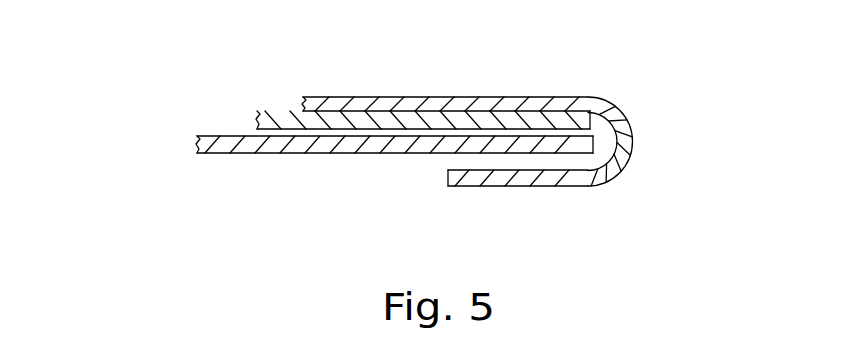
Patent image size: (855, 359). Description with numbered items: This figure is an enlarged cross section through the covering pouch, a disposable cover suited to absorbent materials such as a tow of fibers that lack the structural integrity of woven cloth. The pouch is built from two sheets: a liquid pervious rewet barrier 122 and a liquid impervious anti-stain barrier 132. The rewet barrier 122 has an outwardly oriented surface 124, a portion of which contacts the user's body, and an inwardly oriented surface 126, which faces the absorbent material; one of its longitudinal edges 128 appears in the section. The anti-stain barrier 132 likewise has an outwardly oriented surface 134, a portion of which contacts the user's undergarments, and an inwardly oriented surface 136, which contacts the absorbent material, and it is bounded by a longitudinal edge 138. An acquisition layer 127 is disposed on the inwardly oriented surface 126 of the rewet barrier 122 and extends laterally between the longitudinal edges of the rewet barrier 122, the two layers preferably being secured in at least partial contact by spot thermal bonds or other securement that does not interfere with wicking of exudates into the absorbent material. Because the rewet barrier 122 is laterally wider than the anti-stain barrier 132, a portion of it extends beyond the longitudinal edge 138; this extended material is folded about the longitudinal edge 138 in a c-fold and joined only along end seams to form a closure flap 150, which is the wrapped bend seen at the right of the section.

The rewet barrier 122 is at (413, 98).
The outwardly oriented surface of rewet barrier 124 is at (538, 98).
The inwardly oriented surface of rewet barrier 126 is at (585, 106).
The acquisition layer 127 is at (303, 110).
The longitudinal edge of rewet barrier 128 is at (632, 144).
The anti-stain barrier 132 is at (433, 148).
The outwardly oriented surface of anti-stain barrier 134 is at (277, 153).
The inwardly oriented surface of anti-stain barrier 136 is at (242, 135).
The longitudinal edge of anti-stain barrier 138 is at (593, 147).
The closure flap 150 is at (406, 145).